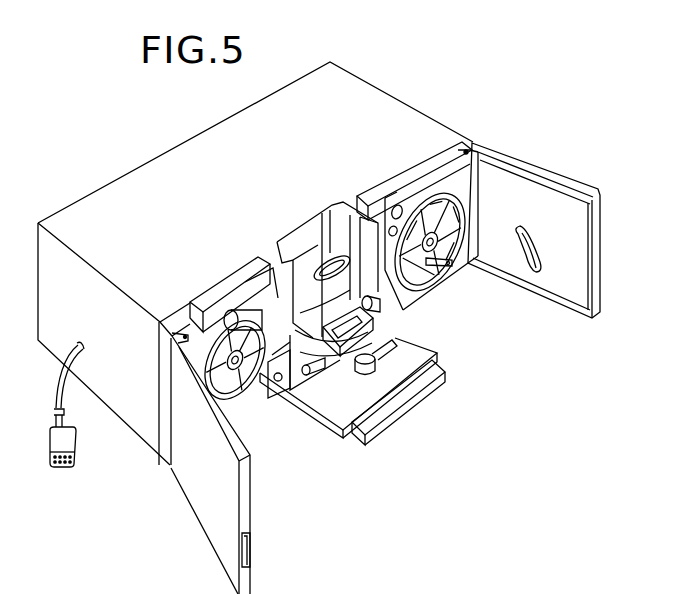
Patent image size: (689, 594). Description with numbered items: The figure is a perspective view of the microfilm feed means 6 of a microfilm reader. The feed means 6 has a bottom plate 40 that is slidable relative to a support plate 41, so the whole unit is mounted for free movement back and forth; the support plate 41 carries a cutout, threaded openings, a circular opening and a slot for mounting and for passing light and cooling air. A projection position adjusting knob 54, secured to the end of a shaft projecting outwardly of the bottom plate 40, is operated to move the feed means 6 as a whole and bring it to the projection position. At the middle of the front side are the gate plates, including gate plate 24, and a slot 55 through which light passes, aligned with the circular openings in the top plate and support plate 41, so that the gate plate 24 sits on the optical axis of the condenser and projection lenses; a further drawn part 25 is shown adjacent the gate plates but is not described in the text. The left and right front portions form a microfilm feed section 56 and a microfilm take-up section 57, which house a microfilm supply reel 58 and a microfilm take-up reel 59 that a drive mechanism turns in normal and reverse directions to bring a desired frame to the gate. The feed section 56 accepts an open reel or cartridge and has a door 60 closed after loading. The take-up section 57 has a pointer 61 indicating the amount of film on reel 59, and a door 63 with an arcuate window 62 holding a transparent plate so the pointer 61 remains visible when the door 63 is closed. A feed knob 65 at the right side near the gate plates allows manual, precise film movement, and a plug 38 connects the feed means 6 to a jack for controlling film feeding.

The microfilm feed means 6 is at (420, 104).
The gate plate 24 is at (338, 352).
The rod 25 is at (395, 350).
The plug 38 is at (76, 450).
The bottom plate 40 is at (317, 395).
The support plate 41 is at (380, 437).
The projection position adjusting knob 54 is at (361, 374).
The slot 55 is at (318, 270).
The microfilm feed section 56 is at (211, 288).
The microfilm take-up section 57 is at (398, 183).
The microfilm supply reel 58 is at (236, 390).
The microfilm take-up reel 59 is at (455, 222).
The door 60 is at (193, 510).
The pointer 61 is at (448, 267).
The window 62 is at (538, 242).
The door 63 is at (587, 219).
The feed knob 65 is at (386, 312).